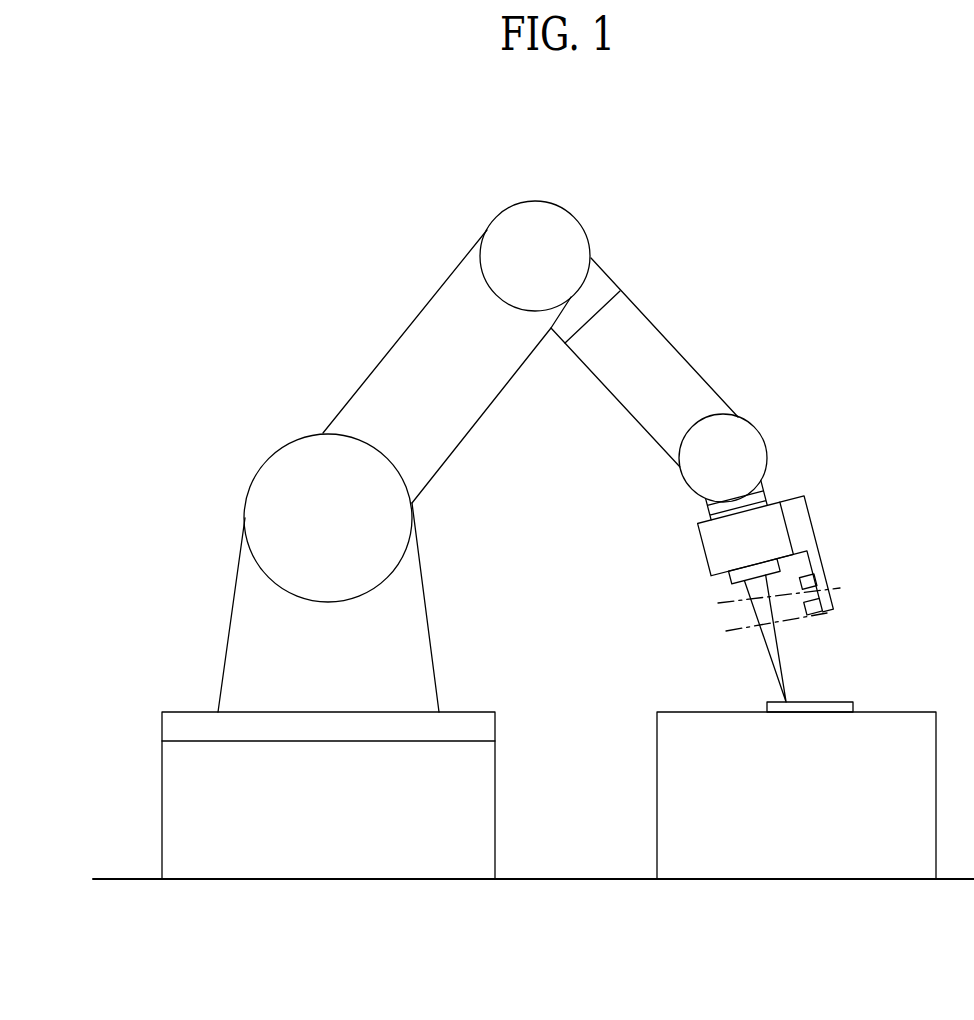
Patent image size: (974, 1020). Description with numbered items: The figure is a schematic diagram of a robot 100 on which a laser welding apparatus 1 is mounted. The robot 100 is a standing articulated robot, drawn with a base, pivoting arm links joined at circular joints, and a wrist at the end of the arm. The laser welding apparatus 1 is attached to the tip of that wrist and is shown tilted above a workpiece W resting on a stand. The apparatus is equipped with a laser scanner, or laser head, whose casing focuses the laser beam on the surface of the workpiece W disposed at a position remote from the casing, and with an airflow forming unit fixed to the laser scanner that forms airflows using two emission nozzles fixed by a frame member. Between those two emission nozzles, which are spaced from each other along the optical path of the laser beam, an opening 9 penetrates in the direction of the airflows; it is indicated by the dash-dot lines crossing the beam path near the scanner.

The robot 100 is at (538, 486).
The laser welding apparatus 1 is at (719, 591).
The opening 9 is at (832, 590).
The workpiece W is at (777, 702).